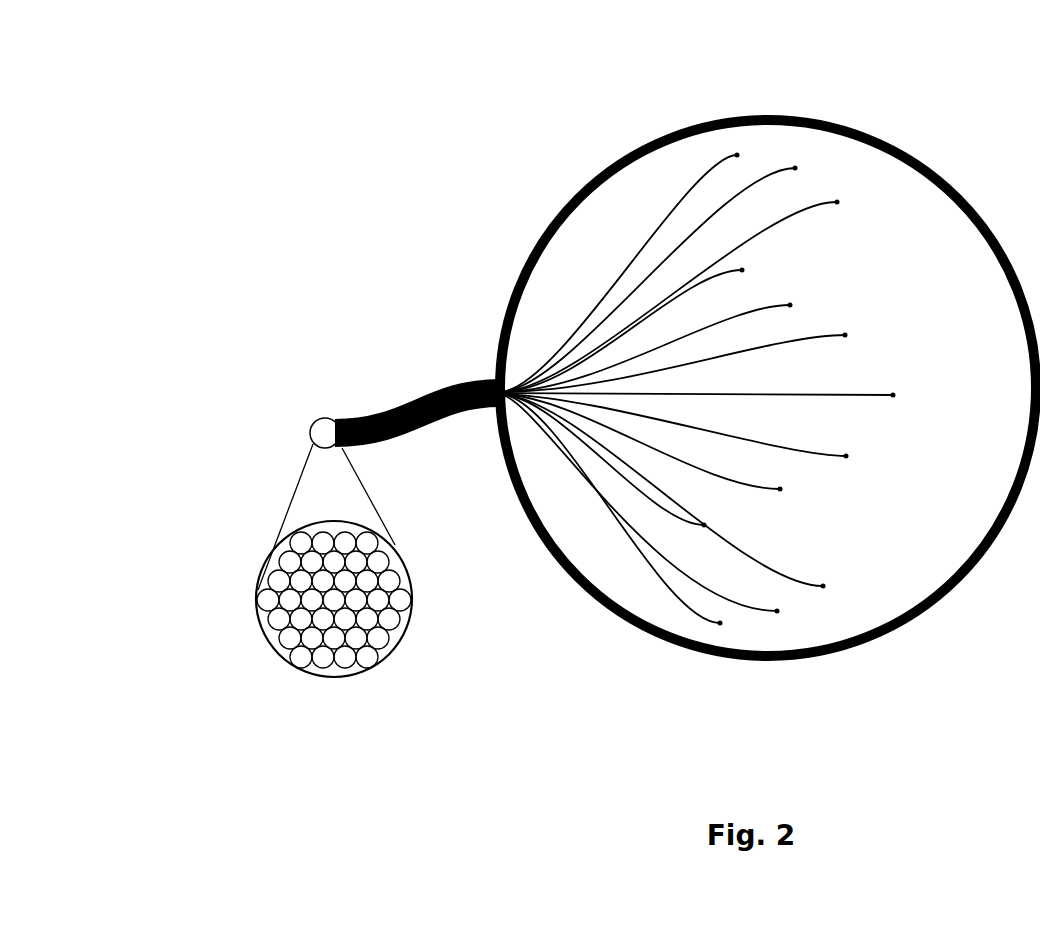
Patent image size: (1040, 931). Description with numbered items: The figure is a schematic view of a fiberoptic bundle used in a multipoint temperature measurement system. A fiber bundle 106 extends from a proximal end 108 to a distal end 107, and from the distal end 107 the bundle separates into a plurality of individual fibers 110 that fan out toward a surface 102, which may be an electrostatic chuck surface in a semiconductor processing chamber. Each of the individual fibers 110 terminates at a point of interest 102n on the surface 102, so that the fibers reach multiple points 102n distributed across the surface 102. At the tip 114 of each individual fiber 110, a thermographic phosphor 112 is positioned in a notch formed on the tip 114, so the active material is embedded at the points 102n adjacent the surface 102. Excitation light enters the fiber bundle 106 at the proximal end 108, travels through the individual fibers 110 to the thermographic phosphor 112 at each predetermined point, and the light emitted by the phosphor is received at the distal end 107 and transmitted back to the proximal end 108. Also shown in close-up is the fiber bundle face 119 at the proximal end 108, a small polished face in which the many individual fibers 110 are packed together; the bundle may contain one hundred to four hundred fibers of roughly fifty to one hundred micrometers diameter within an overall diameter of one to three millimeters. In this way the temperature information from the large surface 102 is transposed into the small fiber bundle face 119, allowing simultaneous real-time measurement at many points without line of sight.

The surface 102 is at (606, 168).
The multiple points 102n is at (844, 200).
The fiber bundle 106 is at (385, 406).
The distal end 107 is at (490, 379).
The proximal end 108 is at (311, 422).
The individual fibers 110 is at (641, 583).
The thermographic phosphor 112 is at (737, 148).
The tip 114 is at (818, 594).
The fiber bundle face 119 is at (257, 597).